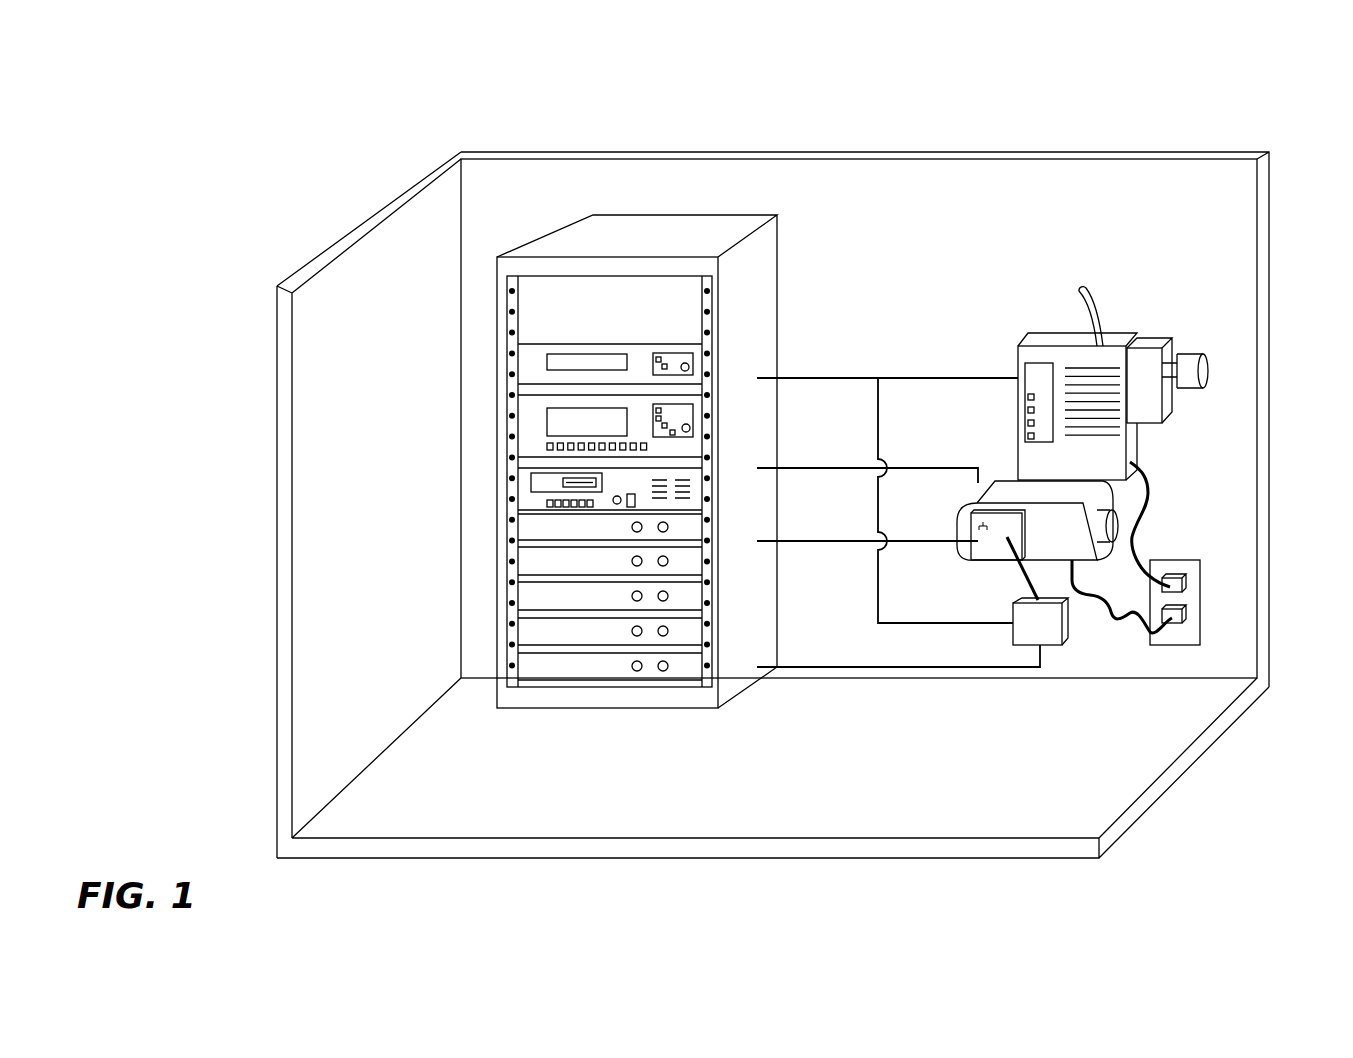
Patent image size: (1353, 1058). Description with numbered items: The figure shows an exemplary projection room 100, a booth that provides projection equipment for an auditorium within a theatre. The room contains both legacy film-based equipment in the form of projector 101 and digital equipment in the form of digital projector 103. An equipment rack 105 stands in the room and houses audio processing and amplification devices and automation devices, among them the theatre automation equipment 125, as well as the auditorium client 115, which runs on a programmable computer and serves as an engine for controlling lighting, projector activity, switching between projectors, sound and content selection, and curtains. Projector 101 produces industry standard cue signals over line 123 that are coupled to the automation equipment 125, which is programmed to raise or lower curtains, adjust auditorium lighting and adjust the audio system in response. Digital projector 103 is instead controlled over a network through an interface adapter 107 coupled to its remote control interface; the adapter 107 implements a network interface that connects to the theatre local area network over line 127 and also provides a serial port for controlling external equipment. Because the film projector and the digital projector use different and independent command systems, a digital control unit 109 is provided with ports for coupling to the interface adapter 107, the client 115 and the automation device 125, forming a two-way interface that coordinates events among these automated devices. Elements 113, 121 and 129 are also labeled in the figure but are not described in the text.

The projection room 100 is at (1168, 68).
The projector 101 is at (1128, 345).
The digital projector 103 is at (1007, 508).
The equipment rack 105 is at (581, 443).
The interface adapter 107 is at (972, 518).
The digital control unit 109 is at (1057, 648).
The power outlet 113 is at (1188, 593).
The auditorium client 115 is at (530, 488).
The power cord 121 is at (1143, 508).
The line 123 is at (928, 378).
The theatre automation equipment 125 is at (525, 364).
The line 127 is at (837, 542).
The power cord 129 is at (1112, 620).